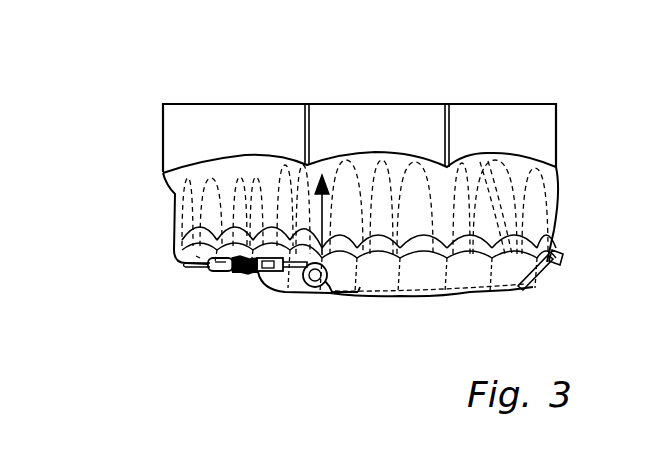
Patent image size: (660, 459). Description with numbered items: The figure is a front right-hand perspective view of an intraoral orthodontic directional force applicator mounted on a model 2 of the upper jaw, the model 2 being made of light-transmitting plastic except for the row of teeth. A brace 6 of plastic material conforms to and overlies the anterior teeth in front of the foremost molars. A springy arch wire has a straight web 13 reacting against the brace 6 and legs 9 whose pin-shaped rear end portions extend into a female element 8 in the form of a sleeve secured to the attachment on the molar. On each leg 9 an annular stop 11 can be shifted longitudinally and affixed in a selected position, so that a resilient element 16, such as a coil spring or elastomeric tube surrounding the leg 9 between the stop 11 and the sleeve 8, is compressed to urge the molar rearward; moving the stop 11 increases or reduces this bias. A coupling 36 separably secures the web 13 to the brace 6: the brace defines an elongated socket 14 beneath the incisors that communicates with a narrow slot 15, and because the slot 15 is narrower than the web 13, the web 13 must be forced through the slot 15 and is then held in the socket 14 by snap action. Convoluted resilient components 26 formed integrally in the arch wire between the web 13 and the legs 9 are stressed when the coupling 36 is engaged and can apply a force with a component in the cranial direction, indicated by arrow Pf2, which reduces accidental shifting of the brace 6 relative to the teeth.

The model 2 is at (525, 117).
The brace 6 is at (467, 285).
The female element 8 is at (208, 268).
The leg 9 is at (200, 256).
The stop 11 is at (272, 271).
The web 13 is at (340, 295).
The socket 14 is at (527, 292).
The slot 15 is at (357, 298).
The resilient element 16 is at (245, 279).
The resilient component 26 is at (297, 288).
The coupling 36 is at (393, 301).
The arrow Pf2 is at (326, 193).